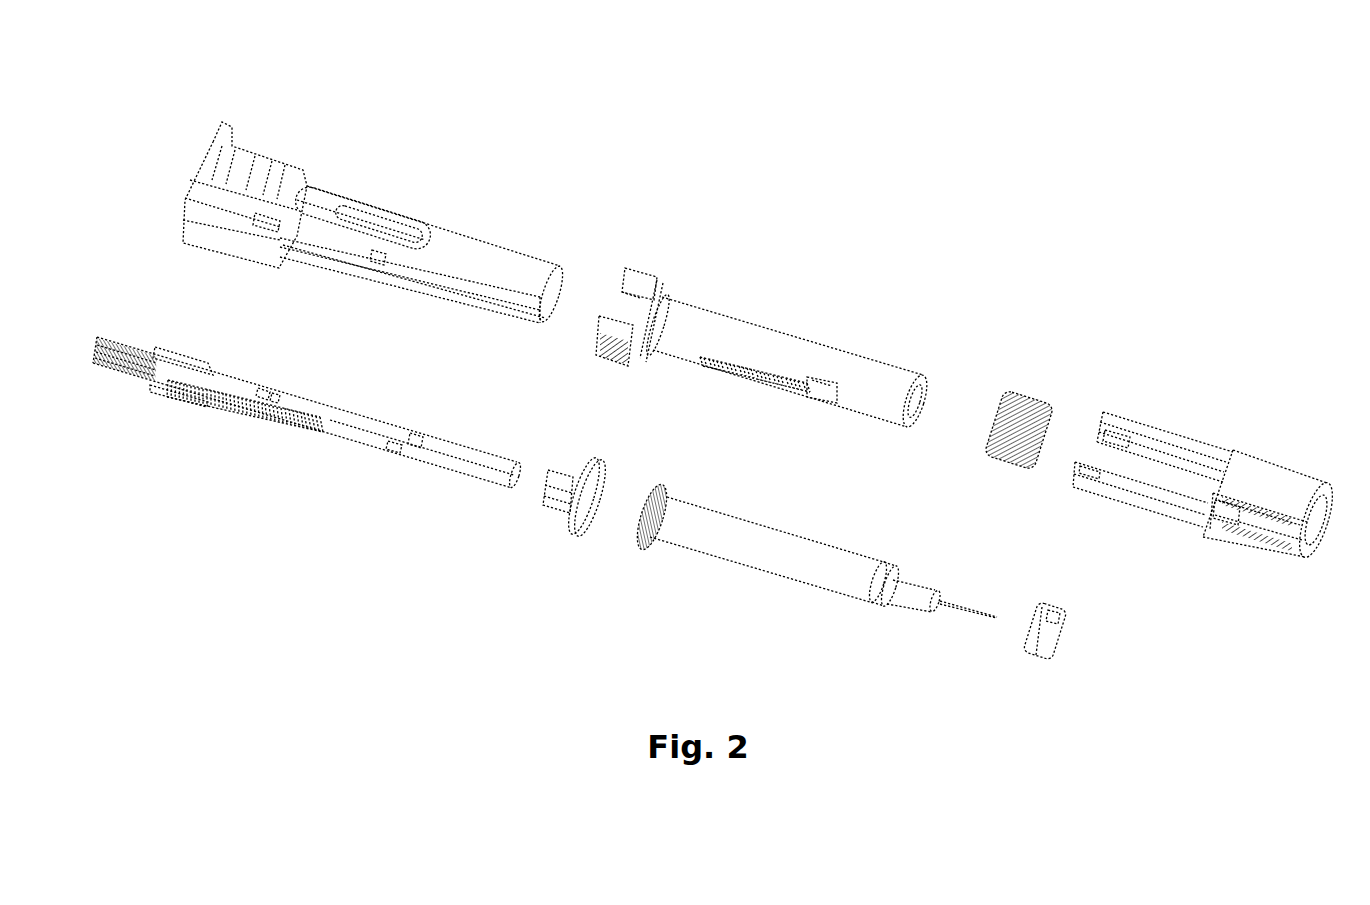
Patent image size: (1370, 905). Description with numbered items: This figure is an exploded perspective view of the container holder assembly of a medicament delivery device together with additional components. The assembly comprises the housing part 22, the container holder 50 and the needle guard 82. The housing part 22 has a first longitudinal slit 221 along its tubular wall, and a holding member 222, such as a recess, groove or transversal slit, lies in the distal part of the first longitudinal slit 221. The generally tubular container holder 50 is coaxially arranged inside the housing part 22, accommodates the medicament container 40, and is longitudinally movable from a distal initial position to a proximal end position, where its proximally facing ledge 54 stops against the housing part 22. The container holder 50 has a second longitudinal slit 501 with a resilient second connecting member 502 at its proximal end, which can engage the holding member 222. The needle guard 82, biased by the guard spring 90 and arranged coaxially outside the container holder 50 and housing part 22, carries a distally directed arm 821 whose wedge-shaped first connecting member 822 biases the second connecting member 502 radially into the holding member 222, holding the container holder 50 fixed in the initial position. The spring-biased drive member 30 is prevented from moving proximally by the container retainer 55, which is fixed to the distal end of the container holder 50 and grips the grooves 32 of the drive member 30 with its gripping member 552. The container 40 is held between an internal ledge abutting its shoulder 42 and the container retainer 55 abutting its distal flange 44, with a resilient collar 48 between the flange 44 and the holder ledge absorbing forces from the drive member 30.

The housing part 22 is at (470, 253).
The first longitudinal slit 221 is at (500, 297).
The holding member 222 is at (377, 253).
The drive member 30 is at (308, 405).
The grooves 32 is at (415, 445).
The medicament container 40 is at (735, 535).
The shoulder 42 is at (875, 600).
The distal flange 44 is at (642, 540).
The resilient collar 48 is at (1037, 628).
The container holder 50 is at (875, 377).
The second longitudinal slit 501 is at (728, 362).
The second connecting member 502 is at (820, 395).
The proximally facing ledge 54 is at (667, 293).
The container retainer 55 is at (560, 537).
The gripping member 552 is at (550, 468).
The needle guard 82 is at (1267, 472).
The distally directed arm 821 is at (1122, 497).
The first connecting member 822 is at (1127, 448).
The guard spring 90 is at (1035, 402).